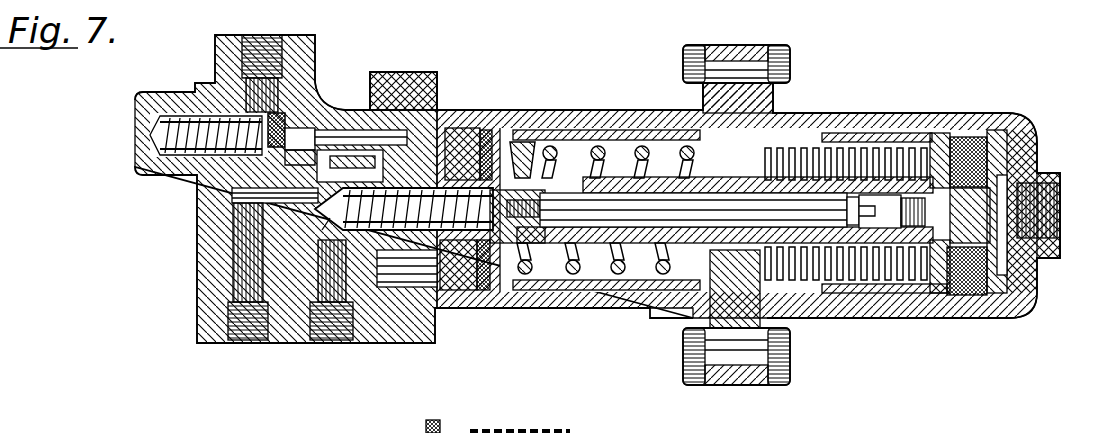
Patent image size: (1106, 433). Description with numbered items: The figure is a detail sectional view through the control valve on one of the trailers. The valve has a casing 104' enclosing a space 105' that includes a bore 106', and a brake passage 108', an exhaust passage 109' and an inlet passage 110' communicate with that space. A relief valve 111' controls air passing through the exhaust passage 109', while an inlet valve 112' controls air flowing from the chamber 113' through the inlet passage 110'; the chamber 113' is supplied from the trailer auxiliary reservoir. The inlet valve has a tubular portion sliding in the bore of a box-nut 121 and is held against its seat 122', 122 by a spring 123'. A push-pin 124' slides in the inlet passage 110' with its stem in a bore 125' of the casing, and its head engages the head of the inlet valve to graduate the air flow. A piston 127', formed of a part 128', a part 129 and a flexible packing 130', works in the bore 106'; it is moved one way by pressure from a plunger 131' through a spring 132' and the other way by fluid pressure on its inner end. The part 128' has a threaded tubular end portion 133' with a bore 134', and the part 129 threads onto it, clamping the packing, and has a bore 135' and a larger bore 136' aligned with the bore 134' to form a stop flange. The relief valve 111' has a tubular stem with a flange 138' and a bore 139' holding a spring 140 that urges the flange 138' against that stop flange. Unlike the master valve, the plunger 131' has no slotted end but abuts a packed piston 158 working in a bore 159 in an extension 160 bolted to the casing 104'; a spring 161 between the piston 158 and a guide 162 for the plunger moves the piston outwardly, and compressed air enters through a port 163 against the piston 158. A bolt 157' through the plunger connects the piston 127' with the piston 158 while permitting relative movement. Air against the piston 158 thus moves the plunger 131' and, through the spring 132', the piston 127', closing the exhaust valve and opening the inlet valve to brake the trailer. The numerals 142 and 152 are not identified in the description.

The casing 104' is at (725, 285).
The space 105' is at (234, 214).
The bore 106' is at (471, 126).
The brake passage 108' is at (290, 307).
The exhaust passage 109' is at (207, 253).
The inlet passage 110' is at (346, 95).
The relief valve 111' is at (332, 229).
The inlet valve 112' is at (303, 61).
The chamber 113' is at (235, 185).
The box-nut 121 is at (150, 162).
The seat 122' is at (318, 92).
The spring 123' is at (176, 138).
The push-pin 124' is at (413, 75).
The bore 125' is at (473, 121).
The piston 127' is at (598, 184).
The part 128' is at (602, 128).
The part 129 is at (482, 115).
The flexible packing 130' is at (518, 261).
The plunger 131' is at (732, 293).
The spring 132' is at (593, 306).
The threaded tubular end portion 133' is at (458, 294).
The bore 134' is at (490, 300).
The bore 135' is at (358, 331).
The bore 136' is at (419, 344).
The flange 138' is at (401, 321).
The bore 139' is at (350, 168).
The spring 140 is at (372, 226).
The spring 142 is at (772, 292).
The bolt 157' is at (758, 272).
The piston 158 is at (932, 140).
The bore 159 is at (800, 125).
The extension 160 is at (852, 118).
The spring 161 is at (882, 140).
The guide 162 is at (780, 115).
The port 163 is at (1040, 172).
The seat 122 is at (342, 420).
The spring 152 is at (582, 432).